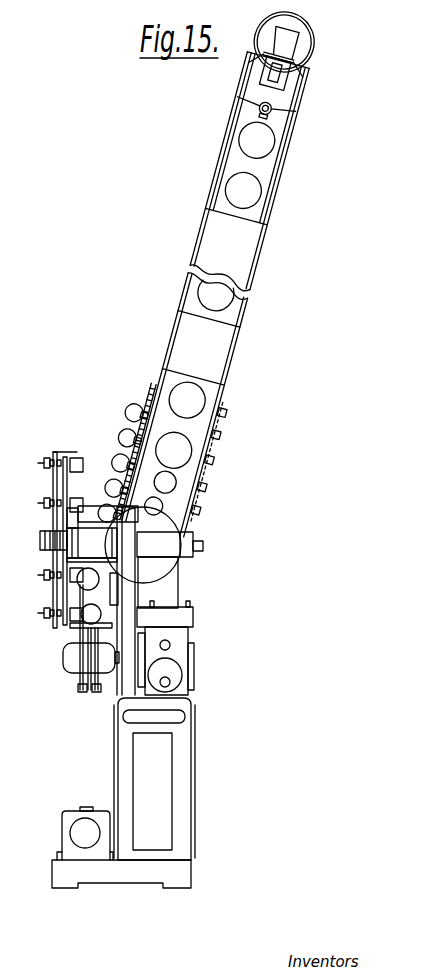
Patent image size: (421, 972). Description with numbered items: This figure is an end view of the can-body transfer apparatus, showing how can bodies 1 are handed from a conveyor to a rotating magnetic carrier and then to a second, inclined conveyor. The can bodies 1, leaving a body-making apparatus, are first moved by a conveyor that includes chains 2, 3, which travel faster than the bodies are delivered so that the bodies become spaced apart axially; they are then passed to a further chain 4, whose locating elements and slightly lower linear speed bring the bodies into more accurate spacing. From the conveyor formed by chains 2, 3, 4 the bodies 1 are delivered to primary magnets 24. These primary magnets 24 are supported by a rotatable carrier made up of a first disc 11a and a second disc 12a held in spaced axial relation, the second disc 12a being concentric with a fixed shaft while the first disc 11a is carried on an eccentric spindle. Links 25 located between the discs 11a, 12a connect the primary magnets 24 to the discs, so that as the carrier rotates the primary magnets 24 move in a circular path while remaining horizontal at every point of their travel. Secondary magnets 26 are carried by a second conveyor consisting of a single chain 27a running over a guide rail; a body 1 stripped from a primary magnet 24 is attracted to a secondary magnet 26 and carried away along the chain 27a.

The can body 1 is at (127, 412).
The chain 2 is at (78, 690).
The chain 3 is at (98, 692).
The chain 4 is at (82, 692).
The first disc 11a is at (56, 474).
The second disc 12a is at (114, 436).
The primary magnet 24 is at (77, 466).
The link 25 is at (67, 436).
The secondary magnet 26 is at (152, 407).
The chain 27a is at (245, 290).